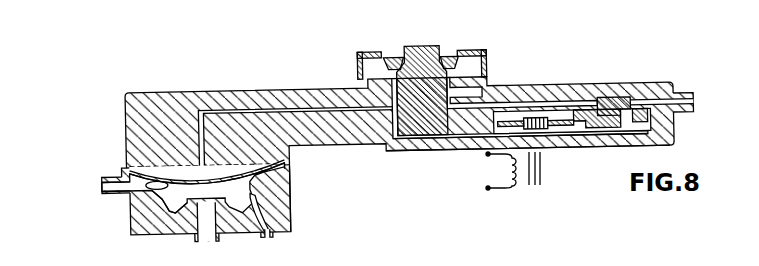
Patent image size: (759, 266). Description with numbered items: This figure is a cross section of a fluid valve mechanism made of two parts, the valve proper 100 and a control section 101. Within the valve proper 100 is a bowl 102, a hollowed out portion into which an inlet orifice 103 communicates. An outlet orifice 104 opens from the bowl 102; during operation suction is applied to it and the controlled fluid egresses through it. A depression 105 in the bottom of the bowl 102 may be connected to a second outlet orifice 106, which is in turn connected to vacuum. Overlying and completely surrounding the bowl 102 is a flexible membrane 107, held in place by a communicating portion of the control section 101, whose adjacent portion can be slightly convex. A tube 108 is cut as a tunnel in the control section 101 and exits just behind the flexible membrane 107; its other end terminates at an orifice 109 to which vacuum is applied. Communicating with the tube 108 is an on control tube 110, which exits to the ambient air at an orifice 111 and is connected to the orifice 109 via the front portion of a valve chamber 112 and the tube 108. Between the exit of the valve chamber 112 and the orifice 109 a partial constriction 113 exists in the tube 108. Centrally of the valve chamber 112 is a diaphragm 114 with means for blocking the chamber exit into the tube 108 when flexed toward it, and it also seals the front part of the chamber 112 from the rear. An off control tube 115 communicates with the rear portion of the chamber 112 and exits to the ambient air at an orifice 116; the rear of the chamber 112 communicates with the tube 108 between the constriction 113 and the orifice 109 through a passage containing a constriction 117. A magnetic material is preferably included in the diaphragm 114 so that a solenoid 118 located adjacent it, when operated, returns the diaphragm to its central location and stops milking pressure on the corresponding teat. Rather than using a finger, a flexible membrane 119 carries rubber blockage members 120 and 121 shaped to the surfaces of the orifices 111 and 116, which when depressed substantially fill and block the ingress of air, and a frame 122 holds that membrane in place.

The valve proper 100 is at (288, 207).
The control section 101 is at (144, 93).
The bowl 102 is at (280, 213).
The inlet orifice 103 is at (100, 181).
The outlet orifice 104 is at (207, 244).
The depression 105 is at (130, 211).
The second outlet orifice 106 is at (262, 241).
The flexible membrane 107 is at (288, 162).
The tube 108 is at (203, 108).
The orifice 109 is at (694, 101).
The on control tube 110 is at (455, 94).
The orifice 111 is at (470, 67).
The valve chamber 112 is at (558, 113).
The partial constriction 113 is at (600, 110).
The diaphragm 114 is at (565, 131).
The off control tube 115 is at (435, 137).
The orifice 116 is at (358, 72).
The constriction 117 is at (638, 112).
The solenoid 118 is at (503, 188).
The flexible membrane 119 is at (460, 56).
The blockage member 120 is at (444, 56).
The blockage member 121 is at (403, 56).
The frame 122 is at (386, 63).